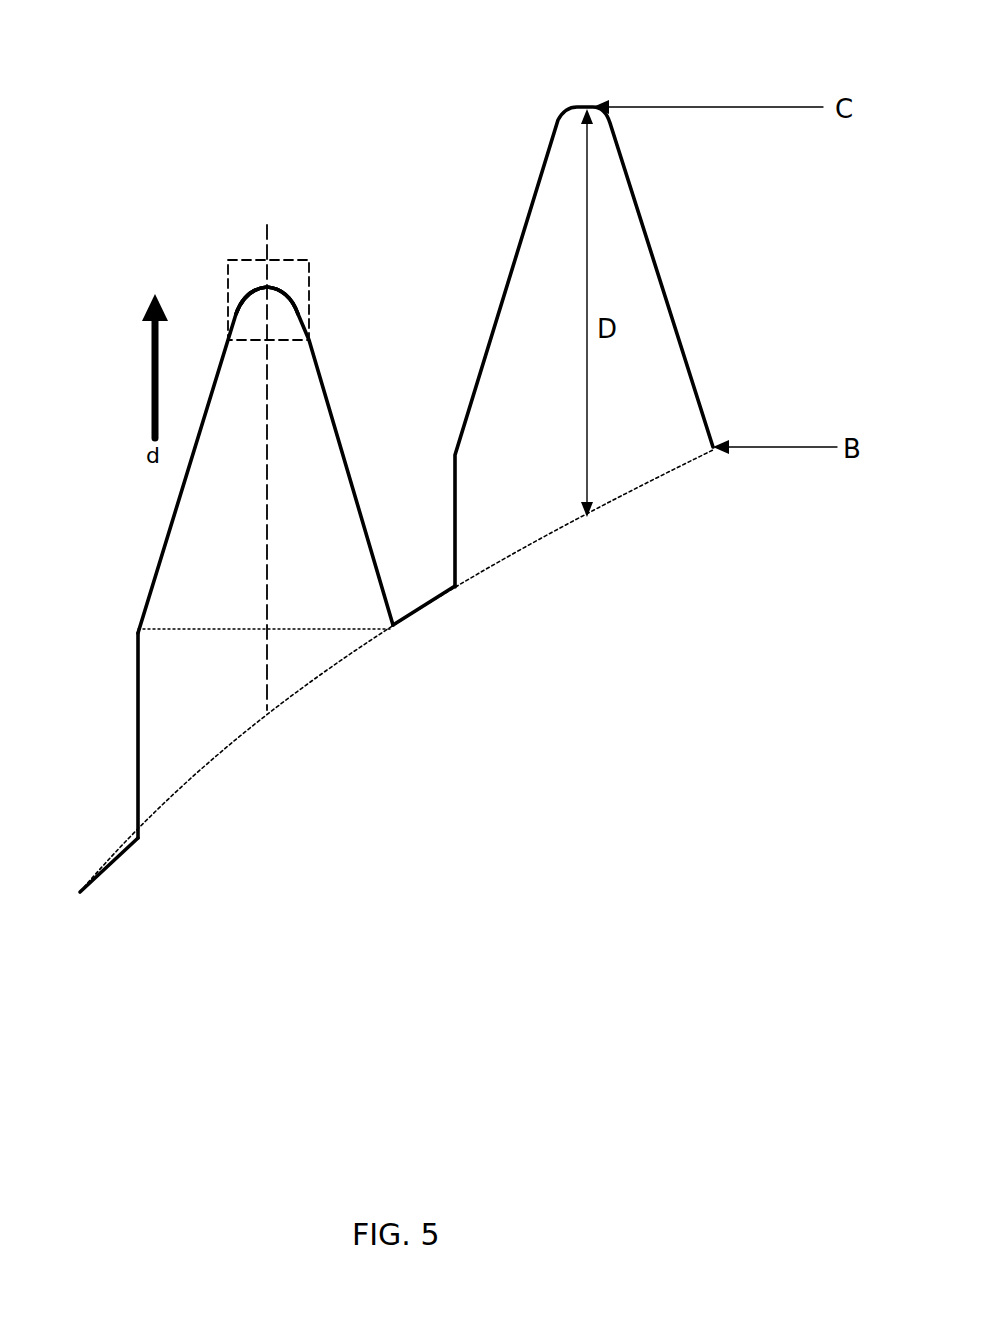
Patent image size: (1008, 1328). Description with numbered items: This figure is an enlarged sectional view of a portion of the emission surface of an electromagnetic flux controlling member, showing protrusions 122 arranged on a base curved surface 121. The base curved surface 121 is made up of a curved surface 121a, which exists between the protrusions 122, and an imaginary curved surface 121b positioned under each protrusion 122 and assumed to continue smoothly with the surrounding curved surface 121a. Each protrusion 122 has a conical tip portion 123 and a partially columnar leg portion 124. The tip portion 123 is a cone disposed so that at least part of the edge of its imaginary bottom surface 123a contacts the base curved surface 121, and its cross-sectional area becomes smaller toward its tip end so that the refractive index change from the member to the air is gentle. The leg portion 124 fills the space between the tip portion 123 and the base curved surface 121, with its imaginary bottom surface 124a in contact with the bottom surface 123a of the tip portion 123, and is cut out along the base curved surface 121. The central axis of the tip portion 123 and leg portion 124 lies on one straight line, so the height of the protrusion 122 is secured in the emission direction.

The base curved surface 121 is at (396, 741).
The curved surface 121a is at (119, 910).
The imaginary curved surface 121b is at (175, 795).
The protrusion 122 is at (578, 82).
The tip portion 123 is at (230, 373).
The bottom surface of tip portion 123a is at (182, 627).
The leg portion 124 is at (145, 732).
The bottom surface of leg portion 124a is at (181, 417).